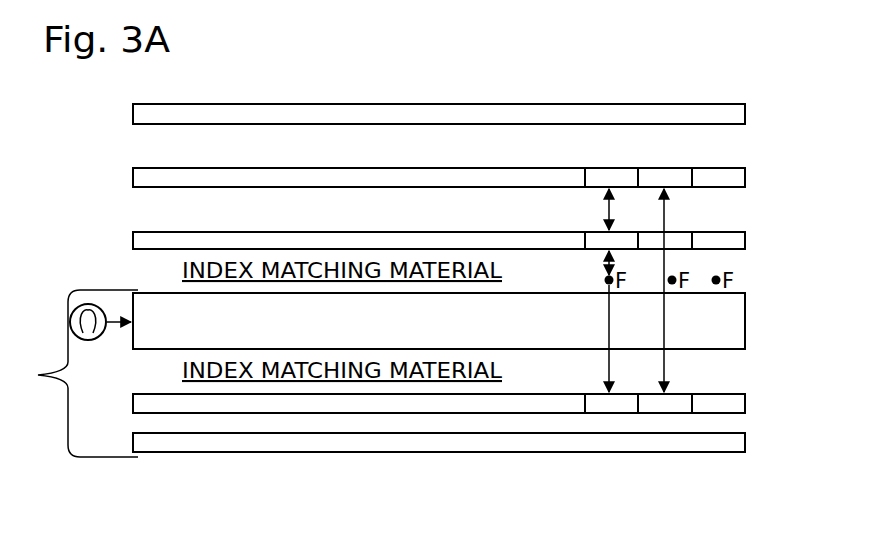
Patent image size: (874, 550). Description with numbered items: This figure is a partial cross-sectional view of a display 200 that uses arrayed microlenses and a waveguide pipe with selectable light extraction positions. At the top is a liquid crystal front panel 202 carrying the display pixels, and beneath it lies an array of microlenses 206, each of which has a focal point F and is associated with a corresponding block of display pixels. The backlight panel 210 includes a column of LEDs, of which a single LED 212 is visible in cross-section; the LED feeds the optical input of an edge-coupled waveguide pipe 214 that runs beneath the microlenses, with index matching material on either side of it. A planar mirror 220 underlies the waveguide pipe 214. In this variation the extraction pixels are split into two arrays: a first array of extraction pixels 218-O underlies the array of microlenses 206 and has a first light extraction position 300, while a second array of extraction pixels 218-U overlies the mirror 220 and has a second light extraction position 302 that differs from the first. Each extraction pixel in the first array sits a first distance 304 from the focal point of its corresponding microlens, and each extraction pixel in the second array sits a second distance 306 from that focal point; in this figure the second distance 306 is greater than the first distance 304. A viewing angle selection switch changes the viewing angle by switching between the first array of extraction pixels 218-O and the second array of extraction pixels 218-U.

The display 200 is at (276, 68).
The liquid crystal front panel 202 is at (430, 108).
The microlens 206 is at (651, 176).
The first array of extraction pixels 218-O is at (733, 240).
The second array of extraction pixels 218-U is at (733, 403).
The waveguide pipe 214 is at (500, 333).
The planar mirror 220 is at (420, 445).
The light emitting diode 212 is at (88, 340).
The backlight panel 210 is at (40, 380).
The first light extraction position 300 is at (607, 218).
The second light extraction position 302 is at (667, 218).
The first distance 304 is at (607, 263).
The second distance 306 is at (607, 372).